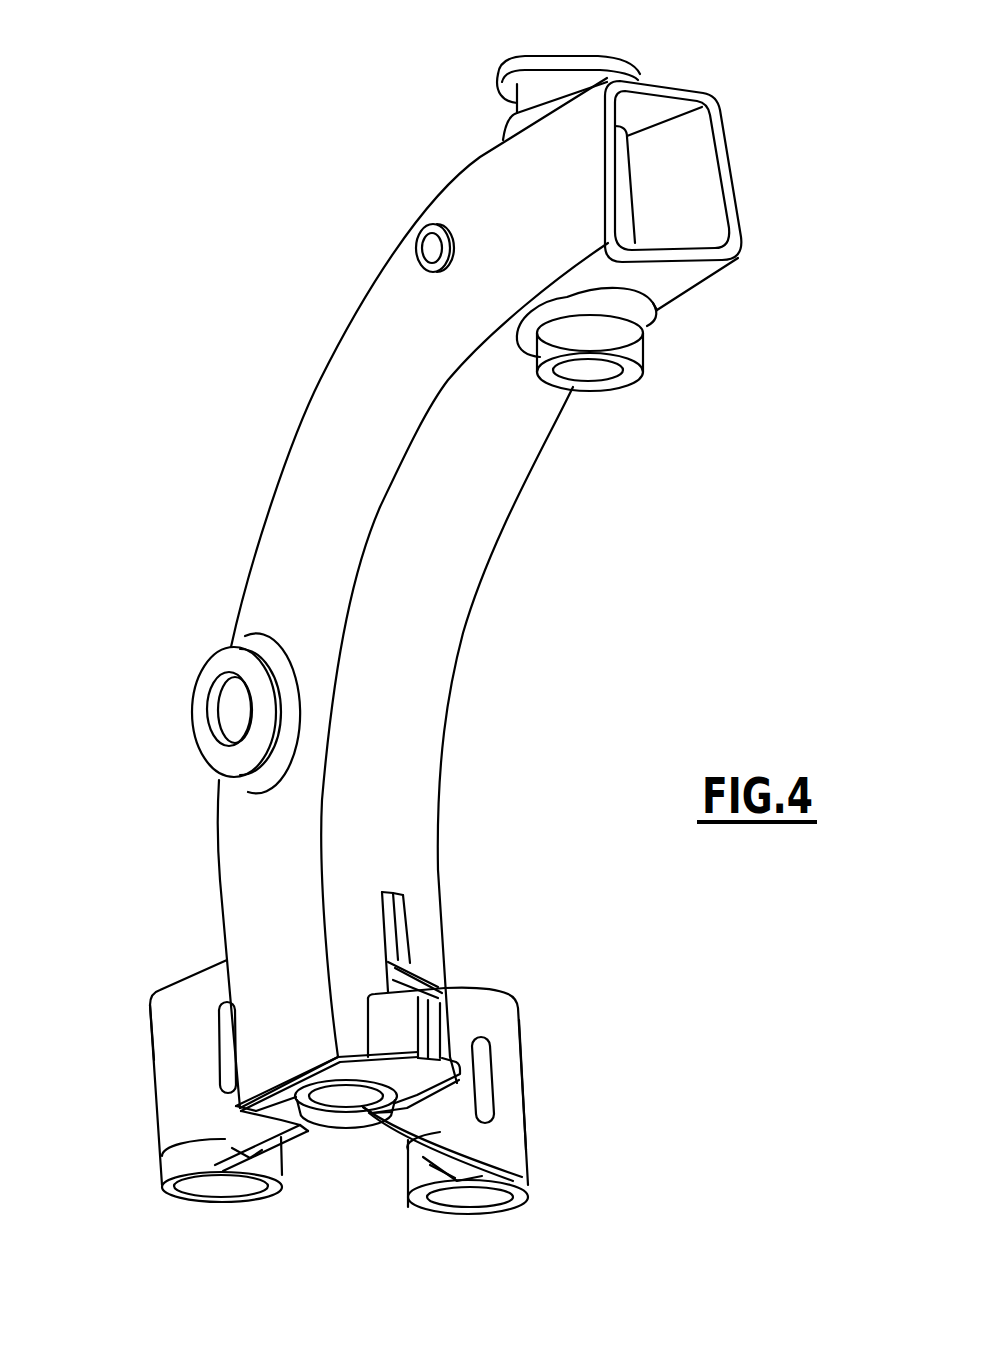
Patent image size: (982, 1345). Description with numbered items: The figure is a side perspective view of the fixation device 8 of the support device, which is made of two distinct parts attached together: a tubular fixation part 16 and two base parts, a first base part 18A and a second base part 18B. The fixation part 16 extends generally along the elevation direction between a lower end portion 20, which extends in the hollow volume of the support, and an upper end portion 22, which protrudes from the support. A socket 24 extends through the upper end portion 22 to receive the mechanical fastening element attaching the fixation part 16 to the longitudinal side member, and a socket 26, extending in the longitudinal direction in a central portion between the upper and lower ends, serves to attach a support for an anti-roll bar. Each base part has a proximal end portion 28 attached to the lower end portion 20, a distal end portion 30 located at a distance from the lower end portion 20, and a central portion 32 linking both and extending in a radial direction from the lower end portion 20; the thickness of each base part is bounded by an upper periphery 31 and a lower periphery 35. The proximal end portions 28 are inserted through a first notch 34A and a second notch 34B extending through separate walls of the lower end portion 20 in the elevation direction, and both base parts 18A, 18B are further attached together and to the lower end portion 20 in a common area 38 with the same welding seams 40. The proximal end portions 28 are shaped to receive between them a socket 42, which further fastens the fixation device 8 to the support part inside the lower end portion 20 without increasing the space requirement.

The fixation device 8 is at (213, 423).
The fixation part 16 is at (447, 562).
The first base part 18A is at (505, 1063).
The second base part 18B is at (178, 1040).
The lower end portion 20 is at (288, 1052).
The upper end portion 22 is at (573, 173).
The socket 24 is at (610, 340).
The socket 26 is at (217, 795).
The proximal end portion 28 is at (365, 1057).
The distal end portion 30 is at (172, 1192).
The upper periphery 31 is at (177, 985).
The central portion 32 is at (200, 1110).
The first notch 34A is at (362, 1133).
The second notch 34B is at (307, 1132).
The lower periphery 35 is at (222, 1147).
The common area 38 is at (467, 1040).
The welding seams 40 is at (393, 1013).
The socket 42 is at (330, 1132).